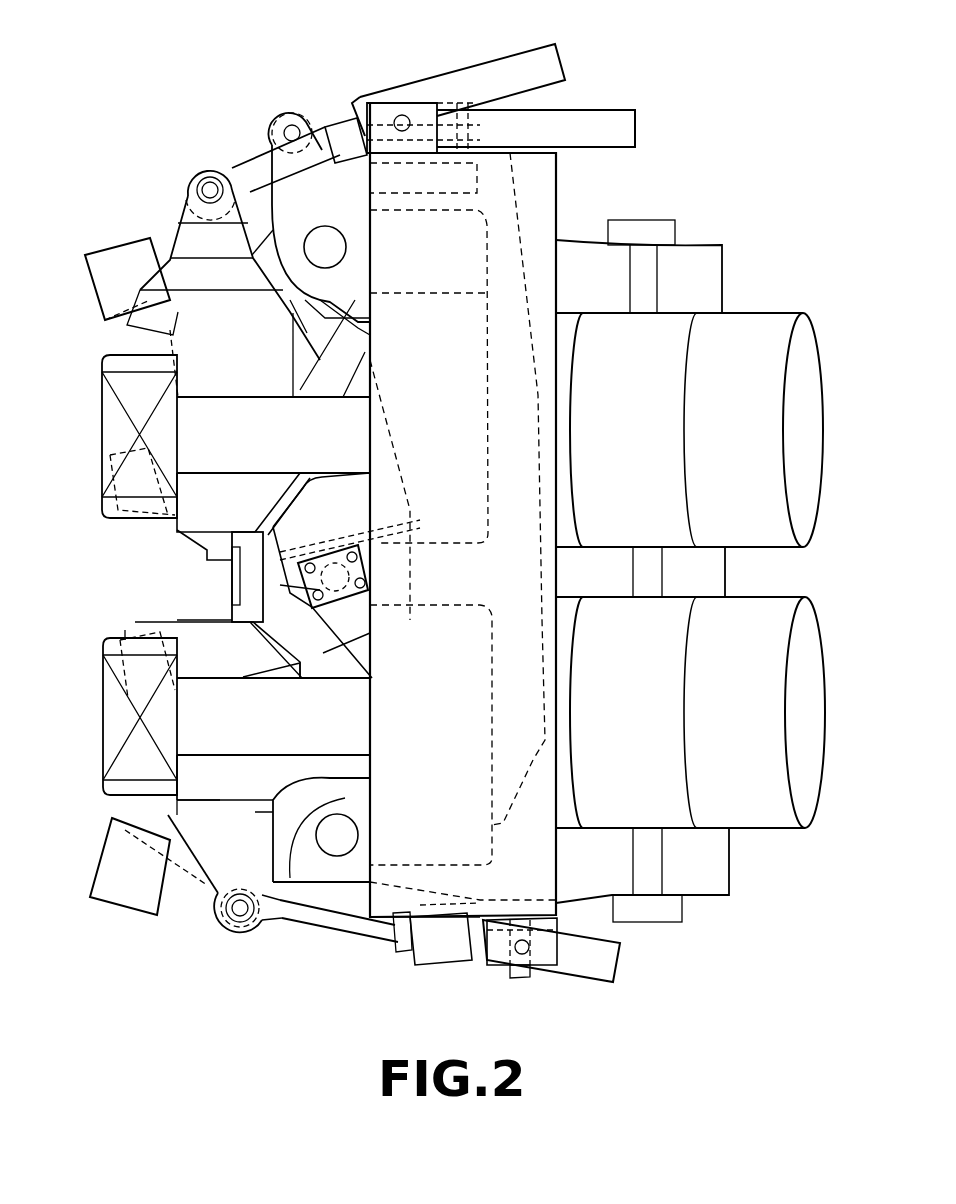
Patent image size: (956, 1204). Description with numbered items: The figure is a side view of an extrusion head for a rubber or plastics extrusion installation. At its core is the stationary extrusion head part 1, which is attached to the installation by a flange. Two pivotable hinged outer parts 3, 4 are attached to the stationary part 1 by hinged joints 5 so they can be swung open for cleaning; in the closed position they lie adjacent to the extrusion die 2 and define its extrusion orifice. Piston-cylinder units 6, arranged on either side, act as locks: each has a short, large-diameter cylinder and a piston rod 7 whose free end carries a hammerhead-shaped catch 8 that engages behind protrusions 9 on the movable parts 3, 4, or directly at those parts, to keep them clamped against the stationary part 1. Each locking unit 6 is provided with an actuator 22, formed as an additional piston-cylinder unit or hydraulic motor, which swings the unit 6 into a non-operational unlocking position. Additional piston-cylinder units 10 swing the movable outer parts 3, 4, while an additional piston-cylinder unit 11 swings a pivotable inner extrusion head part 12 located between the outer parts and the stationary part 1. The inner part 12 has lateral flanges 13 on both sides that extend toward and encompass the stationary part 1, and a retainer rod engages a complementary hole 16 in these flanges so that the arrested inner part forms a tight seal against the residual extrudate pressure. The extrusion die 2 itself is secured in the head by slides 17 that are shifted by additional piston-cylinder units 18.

The stationary extrusion head part 1 is at (523, 880).
The extrusion die 2 is at (248, 592).
The pivotable hinged outer part 3 is at (200, 303).
The pivotable hinged outer part 4 is at (257, 812).
The hinged joint 5 is at (333, 257).
The piston-cylinder unit 6 is at (752, 318).
The piston rod 7 is at (227, 460).
The catch 8 is at (125, 393).
The protrusion 9 is at (200, 657).
The additional piston-cylinder unit 10 is at (483, 78).
The additional piston-cylinder unit 11 is at (577, 120).
The pivotable inner extrusion head part 12 is at (355, 470).
The lateral flange 13 is at (360, 612).
The hole 16 is at (370, 588).
The slide 17 is at (197, 545).
The additional piston-cylinder unit 18 is at (118, 255).
The actuator 22 is at (640, 222).